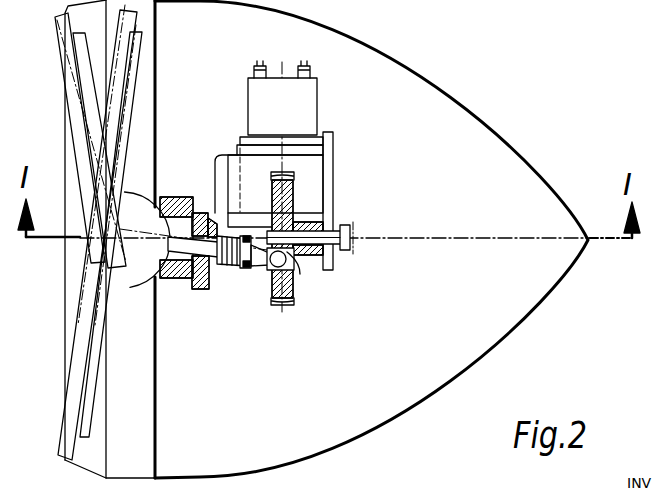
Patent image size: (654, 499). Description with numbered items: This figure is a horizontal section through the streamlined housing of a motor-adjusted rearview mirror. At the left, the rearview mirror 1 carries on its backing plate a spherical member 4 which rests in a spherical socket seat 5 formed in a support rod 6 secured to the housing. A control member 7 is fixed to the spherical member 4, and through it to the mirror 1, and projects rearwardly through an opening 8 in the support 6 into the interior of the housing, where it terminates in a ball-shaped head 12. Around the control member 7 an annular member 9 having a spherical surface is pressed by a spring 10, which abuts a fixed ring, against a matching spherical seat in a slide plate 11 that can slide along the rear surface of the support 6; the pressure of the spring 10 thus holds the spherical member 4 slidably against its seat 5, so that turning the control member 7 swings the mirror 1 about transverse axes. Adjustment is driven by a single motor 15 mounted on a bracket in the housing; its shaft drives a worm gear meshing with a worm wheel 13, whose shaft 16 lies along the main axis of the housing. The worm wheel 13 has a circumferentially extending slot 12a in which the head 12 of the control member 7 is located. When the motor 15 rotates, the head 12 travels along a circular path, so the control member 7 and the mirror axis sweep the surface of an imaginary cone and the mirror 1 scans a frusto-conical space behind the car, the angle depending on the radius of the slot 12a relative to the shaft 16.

The rearview mirror 1 is at (110, 141).
The spherical member 4 is at (140, 279).
The spherical socket seat 5 is at (165, 196).
The support rod 6 is at (180, 282).
The control member 7 is at (216, 264).
The opening 8 is at (183, 196).
The annular member 9 is at (219, 276).
The spring 10 is at (244, 270).
The slide plate 11 is at (200, 292).
The ball-shaped head 12 is at (316, 307).
The circumferentially extending slot 12a is at (305, 270).
The worm wheel 13 is at (283, 197).
The motor 15 is at (303, 115).
The shaft 16 is at (332, 256).